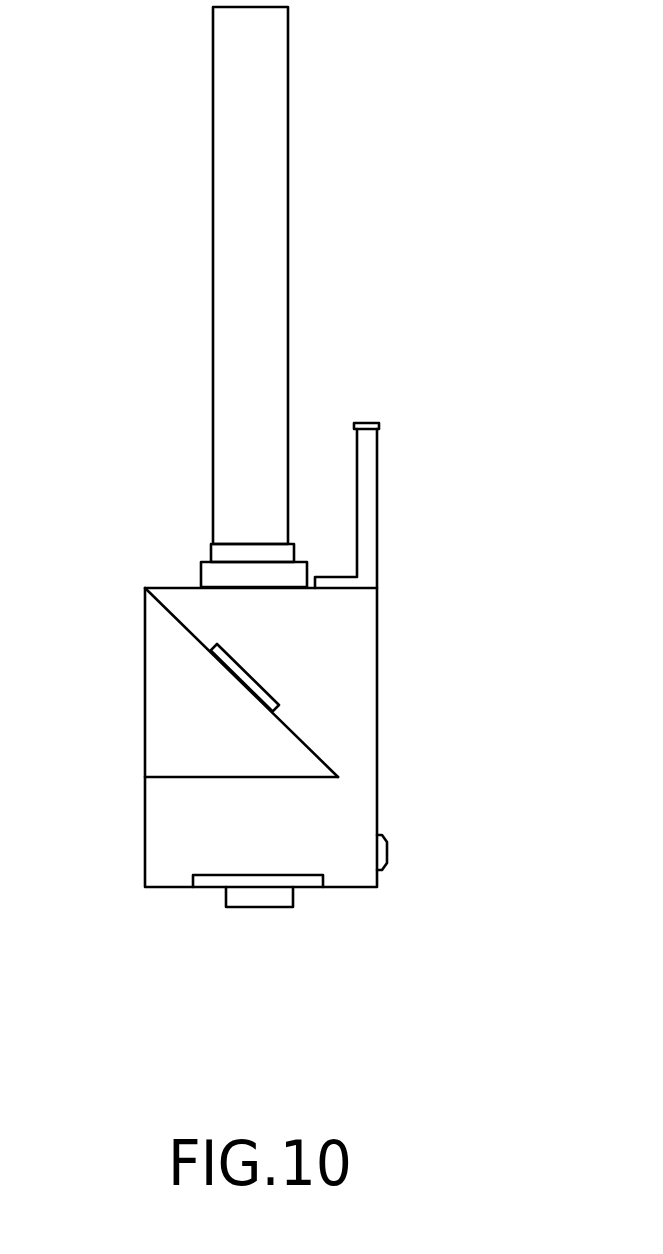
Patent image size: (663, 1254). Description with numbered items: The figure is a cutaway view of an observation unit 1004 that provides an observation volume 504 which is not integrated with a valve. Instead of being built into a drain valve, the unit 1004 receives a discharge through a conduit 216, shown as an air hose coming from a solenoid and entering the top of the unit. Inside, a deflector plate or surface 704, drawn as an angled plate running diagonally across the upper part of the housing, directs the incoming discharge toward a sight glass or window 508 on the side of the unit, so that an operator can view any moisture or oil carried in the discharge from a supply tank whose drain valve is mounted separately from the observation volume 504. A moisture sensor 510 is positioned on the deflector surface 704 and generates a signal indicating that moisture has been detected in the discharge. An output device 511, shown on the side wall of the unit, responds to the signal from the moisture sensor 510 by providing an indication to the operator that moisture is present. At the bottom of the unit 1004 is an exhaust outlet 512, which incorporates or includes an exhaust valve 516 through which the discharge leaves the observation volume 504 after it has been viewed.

The conduit 216 is at (288, 285).
The observation unit 1004 is at (163, 588).
The sight glass or window 508 is at (377, 645).
The deflector plate or surface 704 is at (300, 735).
The moisture sensor 510 is at (252, 672).
The observation volume 504 is at (340, 815).
The output device 511 is at (387, 850).
The exhaust outlet 512 is at (310, 883).
The exhaust valve 516 is at (248, 907).